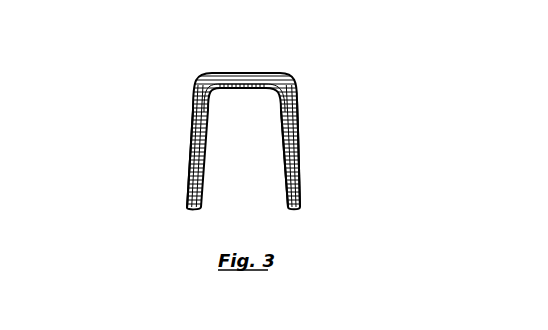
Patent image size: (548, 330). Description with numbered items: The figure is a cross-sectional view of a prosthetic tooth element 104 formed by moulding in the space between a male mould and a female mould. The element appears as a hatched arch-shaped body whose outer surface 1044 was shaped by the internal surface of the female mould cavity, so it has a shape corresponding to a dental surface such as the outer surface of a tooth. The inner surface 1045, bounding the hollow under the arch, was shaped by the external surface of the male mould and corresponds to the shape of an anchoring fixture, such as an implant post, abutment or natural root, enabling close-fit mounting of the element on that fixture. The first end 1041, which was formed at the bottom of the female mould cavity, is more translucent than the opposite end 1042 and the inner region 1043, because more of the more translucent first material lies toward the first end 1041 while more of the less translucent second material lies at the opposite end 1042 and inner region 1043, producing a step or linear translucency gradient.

The prosthetic tooth element 104 is at (185, 90).
The first end 1041 is at (247, 76).
The opposite end 1042 is at (298, 193).
The inner region 1043 is at (196, 146).
The outer surface 1044 is at (293, 117).
The inner surface 1045 is at (281, 148).